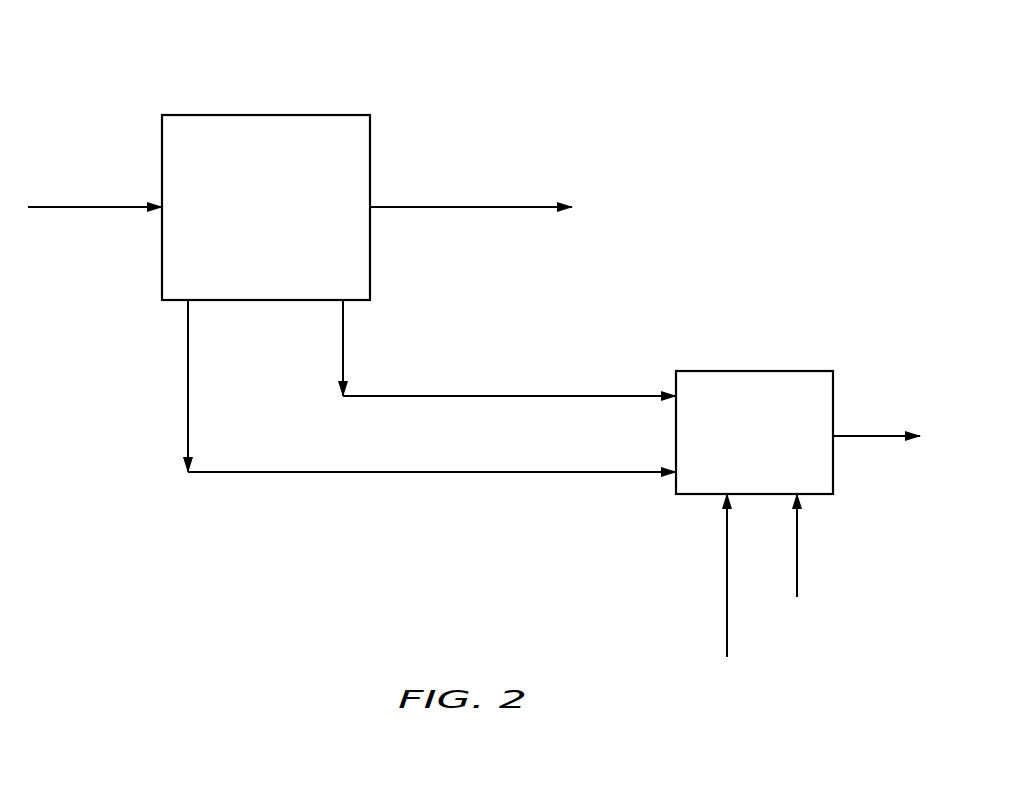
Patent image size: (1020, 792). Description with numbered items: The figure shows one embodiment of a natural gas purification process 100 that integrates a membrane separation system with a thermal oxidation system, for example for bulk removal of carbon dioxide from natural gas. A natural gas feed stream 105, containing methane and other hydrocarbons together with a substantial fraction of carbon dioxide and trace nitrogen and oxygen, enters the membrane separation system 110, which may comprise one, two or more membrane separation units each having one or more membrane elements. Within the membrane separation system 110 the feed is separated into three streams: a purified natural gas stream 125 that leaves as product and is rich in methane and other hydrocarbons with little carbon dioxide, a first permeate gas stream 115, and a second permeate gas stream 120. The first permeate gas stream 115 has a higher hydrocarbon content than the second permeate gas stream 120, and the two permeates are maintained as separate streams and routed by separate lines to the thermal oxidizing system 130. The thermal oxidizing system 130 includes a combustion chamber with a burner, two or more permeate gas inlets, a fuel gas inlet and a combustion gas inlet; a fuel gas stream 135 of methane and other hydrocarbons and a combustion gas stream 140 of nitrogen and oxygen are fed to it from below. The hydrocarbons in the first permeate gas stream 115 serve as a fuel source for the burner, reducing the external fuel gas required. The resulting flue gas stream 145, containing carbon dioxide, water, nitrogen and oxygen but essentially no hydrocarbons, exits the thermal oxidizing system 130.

The natural gas purification process 100 is at (137, 45).
The natural gas feed stream 105 is at (97, 205).
The membrane separation system 110 is at (266, 113).
The first permeate gas stream 115 is at (187, 366).
The second permeate gas stream 120 is at (344, 337).
The purified natural gas stream 125 is at (470, 205).
The thermal oxidizing system 130 is at (754, 369).
The fuel gas stream 135 is at (726, 575).
The combustion gas stream 140 is at (798, 545).
The flue gas stream 145 is at (881, 433).